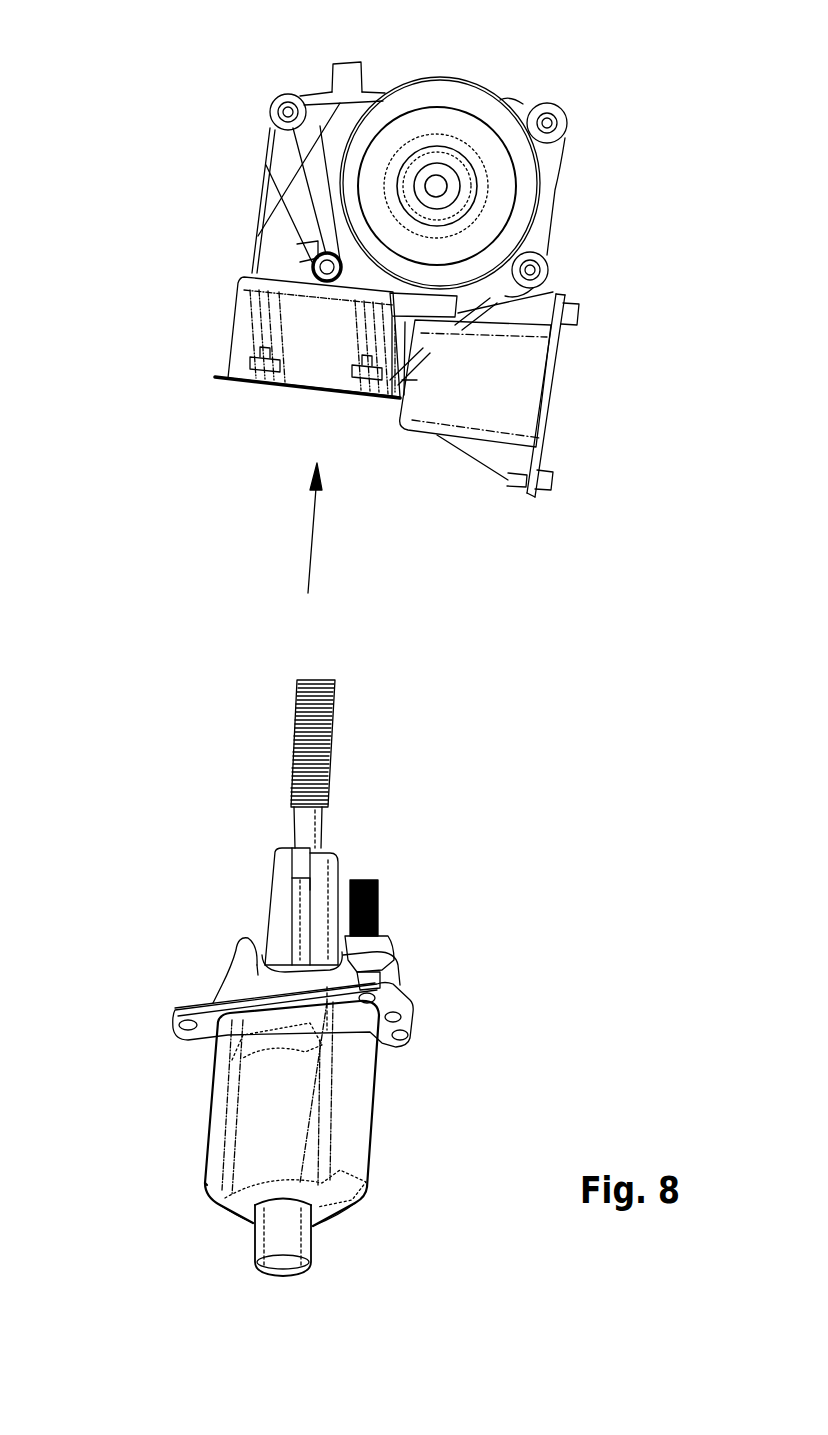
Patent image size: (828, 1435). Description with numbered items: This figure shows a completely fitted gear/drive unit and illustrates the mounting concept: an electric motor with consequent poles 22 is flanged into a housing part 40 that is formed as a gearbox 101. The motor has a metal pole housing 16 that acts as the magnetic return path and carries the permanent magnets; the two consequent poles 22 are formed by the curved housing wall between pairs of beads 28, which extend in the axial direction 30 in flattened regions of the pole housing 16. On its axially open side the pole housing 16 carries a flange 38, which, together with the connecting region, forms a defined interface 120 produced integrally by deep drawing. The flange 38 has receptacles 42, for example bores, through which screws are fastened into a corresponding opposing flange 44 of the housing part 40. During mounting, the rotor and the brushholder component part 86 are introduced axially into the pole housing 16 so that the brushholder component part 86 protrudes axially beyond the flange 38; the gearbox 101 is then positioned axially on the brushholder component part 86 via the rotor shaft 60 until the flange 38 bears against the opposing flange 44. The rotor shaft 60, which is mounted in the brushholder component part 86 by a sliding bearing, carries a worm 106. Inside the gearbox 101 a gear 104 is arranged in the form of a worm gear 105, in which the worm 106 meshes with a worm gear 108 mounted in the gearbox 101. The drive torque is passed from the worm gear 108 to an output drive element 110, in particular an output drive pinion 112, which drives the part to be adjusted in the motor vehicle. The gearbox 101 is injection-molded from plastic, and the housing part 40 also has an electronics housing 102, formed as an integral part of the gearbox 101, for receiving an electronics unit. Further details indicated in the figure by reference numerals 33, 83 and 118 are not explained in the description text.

The pole housing 16 is at (291, 1113).
The consequent poles 22 is at (258, 1122).
The beads 28 is at (226, 1160).
The axial direction 30 is at (313, 521).
The bearing end 33 is at (322, 1208).
The flange 38 is at (302, 1029).
The housing part 40 is at (482, 180).
The receptacles 42 is at (412, 1012).
The opposing flange 44 is at (253, 404).
The rotor shaft 60 is at (322, 680).
The output shaft 83 is at (280, 1230).
The brushholder component part 86 is at (262, 993).
The gearbox 101 is at (510, 100).
The electronics housing 102 is at (520, 409).
The gear 104 is at (265, 171).
The worm gear 105 is at (300, 145).
The worm 106 is at (330, 775).
The worm gear 108 is at (497, 160).
The output drive element 110 is at (539, 193).
The output drive pinion 112 is at (452, 187).
The spindle bearing 118 is at (293, 863).
The defined interface 120 is at (214, 378).